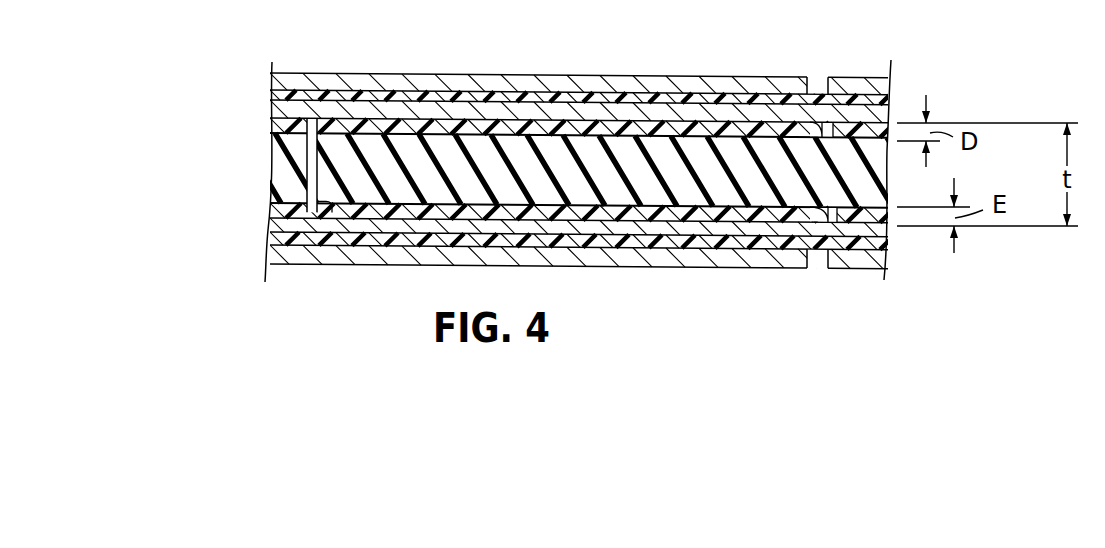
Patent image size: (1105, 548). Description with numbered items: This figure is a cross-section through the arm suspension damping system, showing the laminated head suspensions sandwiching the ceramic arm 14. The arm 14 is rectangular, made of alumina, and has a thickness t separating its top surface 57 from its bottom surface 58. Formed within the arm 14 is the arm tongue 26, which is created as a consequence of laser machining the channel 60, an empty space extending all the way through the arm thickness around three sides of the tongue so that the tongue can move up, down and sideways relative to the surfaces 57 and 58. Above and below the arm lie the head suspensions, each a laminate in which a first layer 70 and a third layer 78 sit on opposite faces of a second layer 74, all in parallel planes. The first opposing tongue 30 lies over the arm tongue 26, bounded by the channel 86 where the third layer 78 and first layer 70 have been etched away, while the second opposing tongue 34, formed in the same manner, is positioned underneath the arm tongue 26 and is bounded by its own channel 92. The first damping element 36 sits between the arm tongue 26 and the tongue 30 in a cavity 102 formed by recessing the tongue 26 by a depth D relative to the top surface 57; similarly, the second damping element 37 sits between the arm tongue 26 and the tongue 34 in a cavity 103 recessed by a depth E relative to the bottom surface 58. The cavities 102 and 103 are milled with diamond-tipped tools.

The arm 14 is at (278, 157).
The arm tongue 26 is at (327, 172).
The first opposing tongue 30 is at (520, 73).
The second opposing tongue 34 is at (678, 270).
The first damping element 36 is at (273, 128).
The second damping element 37 is at (267, 212).
The top surface 57 is at (884, 118).
The bottom surface 58 is at (887, 233).
The channel 60 is at (312, 190).
The first layer 70 is at (272, 105).
The second layer 74 is at (272, 97).
The third layer 78 is at (267, 76).
The channel 86 is at (813, 85).
The lower gap 92 is at (813, 263).
The cavity 102 is at (827, 123).
The cavity 103 is at (832, 222).